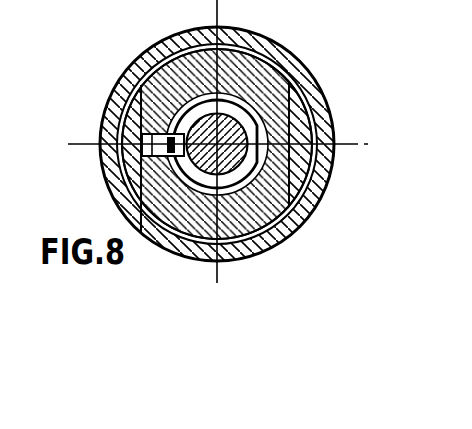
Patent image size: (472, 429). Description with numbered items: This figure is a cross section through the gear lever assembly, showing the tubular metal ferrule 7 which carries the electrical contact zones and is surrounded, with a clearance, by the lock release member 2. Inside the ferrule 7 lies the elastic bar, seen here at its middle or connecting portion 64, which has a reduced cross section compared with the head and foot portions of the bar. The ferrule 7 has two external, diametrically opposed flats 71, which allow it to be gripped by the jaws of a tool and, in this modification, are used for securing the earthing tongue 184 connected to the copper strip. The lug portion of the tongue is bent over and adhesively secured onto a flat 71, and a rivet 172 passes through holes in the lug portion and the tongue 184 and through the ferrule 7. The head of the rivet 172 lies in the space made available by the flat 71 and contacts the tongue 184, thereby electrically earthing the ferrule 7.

The lock release member 2 is at (145, 50).
The ferrule 7 is at (263, 72).
The flats 71 is at (127, 92).
The middle or connecting portion 64 is at (293, 127).
The rivet 172 is at (112, 122).
The earthing tongue 184 is at (128, 174).